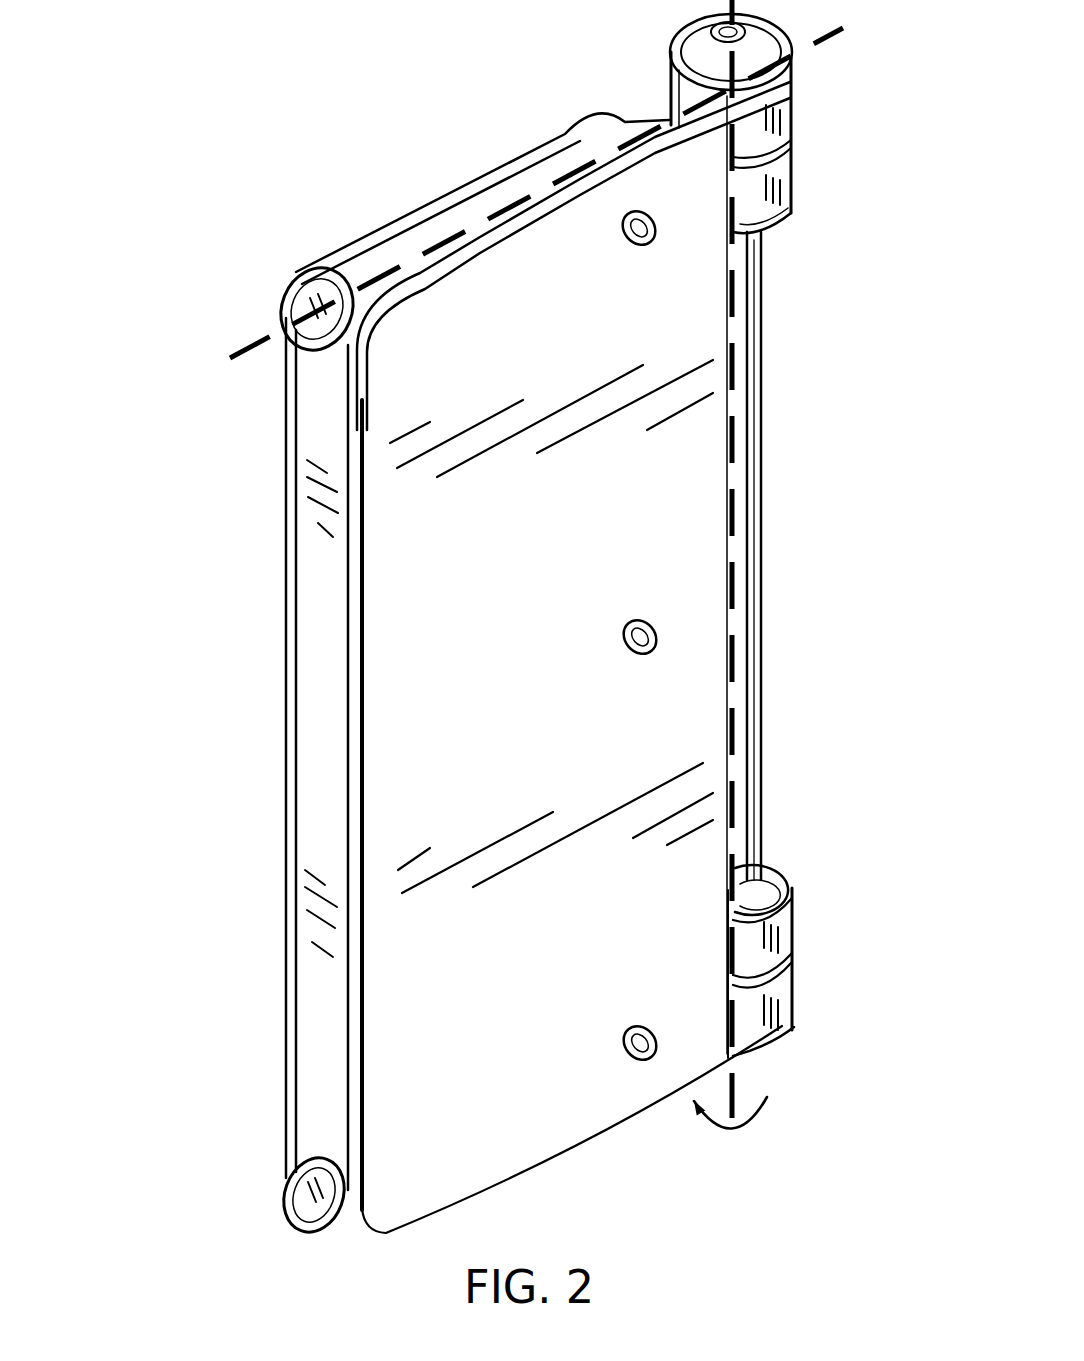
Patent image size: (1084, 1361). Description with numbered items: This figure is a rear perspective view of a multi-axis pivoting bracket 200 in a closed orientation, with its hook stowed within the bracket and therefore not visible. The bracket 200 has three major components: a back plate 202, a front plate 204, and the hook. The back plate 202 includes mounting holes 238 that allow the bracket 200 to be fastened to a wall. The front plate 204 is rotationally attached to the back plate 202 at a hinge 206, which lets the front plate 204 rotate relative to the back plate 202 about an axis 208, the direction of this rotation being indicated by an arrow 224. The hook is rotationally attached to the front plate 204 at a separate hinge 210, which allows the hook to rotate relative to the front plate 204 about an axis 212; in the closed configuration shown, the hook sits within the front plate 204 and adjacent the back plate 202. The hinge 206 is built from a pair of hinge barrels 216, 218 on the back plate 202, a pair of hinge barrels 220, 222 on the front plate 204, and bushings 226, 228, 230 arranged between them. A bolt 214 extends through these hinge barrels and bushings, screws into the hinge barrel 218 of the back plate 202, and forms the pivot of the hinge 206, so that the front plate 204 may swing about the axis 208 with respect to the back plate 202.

The multi-axis pivoting bracket 200 is at (353, 112).
The back plate 202 is at (537, 611).
The front plate 204 is at (287, 661).
The hinge 206 is at (796, 253).
The axis 208 is at (708, 1124).
The hinge 210 is at (445, 217).
The axis 212 is at (236, 353).
The bolt 214 is at (764, 557).
The hinge barrel 216 is at (790, 112).
The hinge barrel 218 is at (791, 1008).
The hinge barrel 220 is at (790, 183).
The hinge barrel 222 is at (791, 929).
The arrow 224 is at (762, 1118).
The bushing 226 is at (791, 77).
The bushing 228 is at (790, 148).
The bushing 230 is at (791, 965).
The mounting holes 238 is at (626, 241).